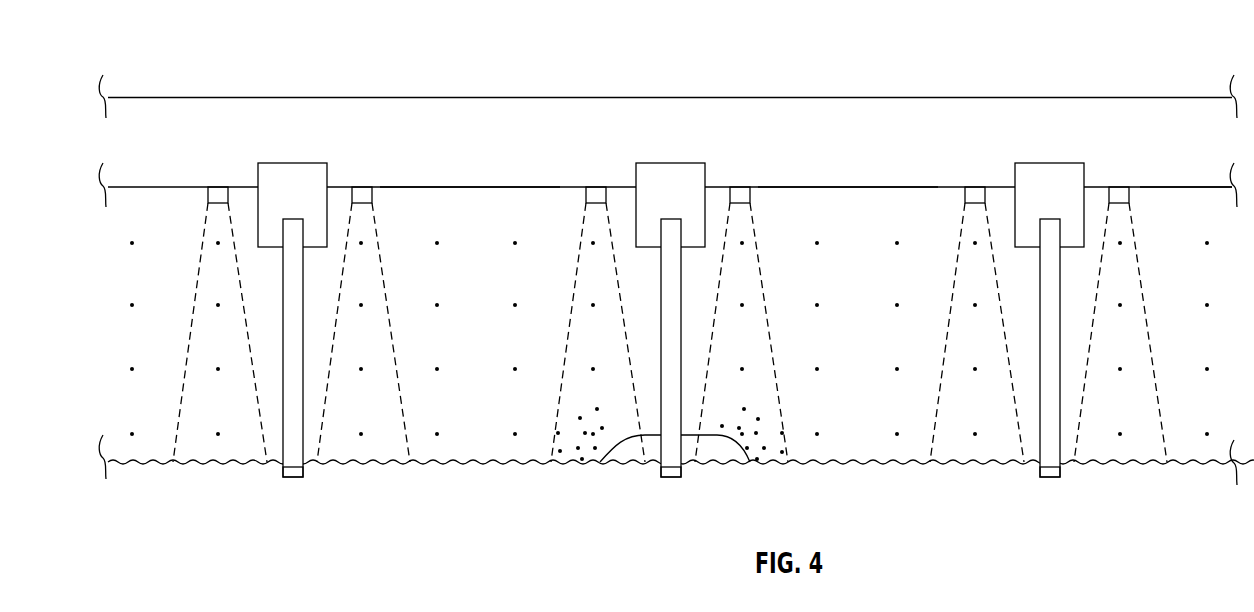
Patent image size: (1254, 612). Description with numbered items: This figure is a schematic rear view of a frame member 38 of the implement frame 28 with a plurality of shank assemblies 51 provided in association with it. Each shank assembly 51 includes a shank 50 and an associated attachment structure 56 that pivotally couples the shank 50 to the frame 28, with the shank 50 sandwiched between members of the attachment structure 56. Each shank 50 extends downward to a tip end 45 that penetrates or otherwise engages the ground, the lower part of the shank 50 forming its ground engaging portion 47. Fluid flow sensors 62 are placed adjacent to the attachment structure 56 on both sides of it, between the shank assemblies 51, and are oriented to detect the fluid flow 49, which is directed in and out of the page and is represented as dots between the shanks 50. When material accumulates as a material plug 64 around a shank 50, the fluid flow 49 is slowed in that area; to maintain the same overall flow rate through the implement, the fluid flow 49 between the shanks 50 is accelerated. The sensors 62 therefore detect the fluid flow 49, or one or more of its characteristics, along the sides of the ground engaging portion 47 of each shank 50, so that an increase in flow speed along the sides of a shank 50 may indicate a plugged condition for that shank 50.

The implement frame 28 is at (647, 52).
The frame member 38 is at (864, 118).
The tip end 45 is at (290, 478).
The ground engaging portion 47 is at (258, 525).
The fluid flow 49 is at (463, 170).
The shank 50 is at (283, 346).
The shank assembly 51 is at (273, 148).
The attachment structure 56 is at (305, 209).
The fluid flow sensor 62 is at (217, 195).
The material plug 64 is at (633, 450).